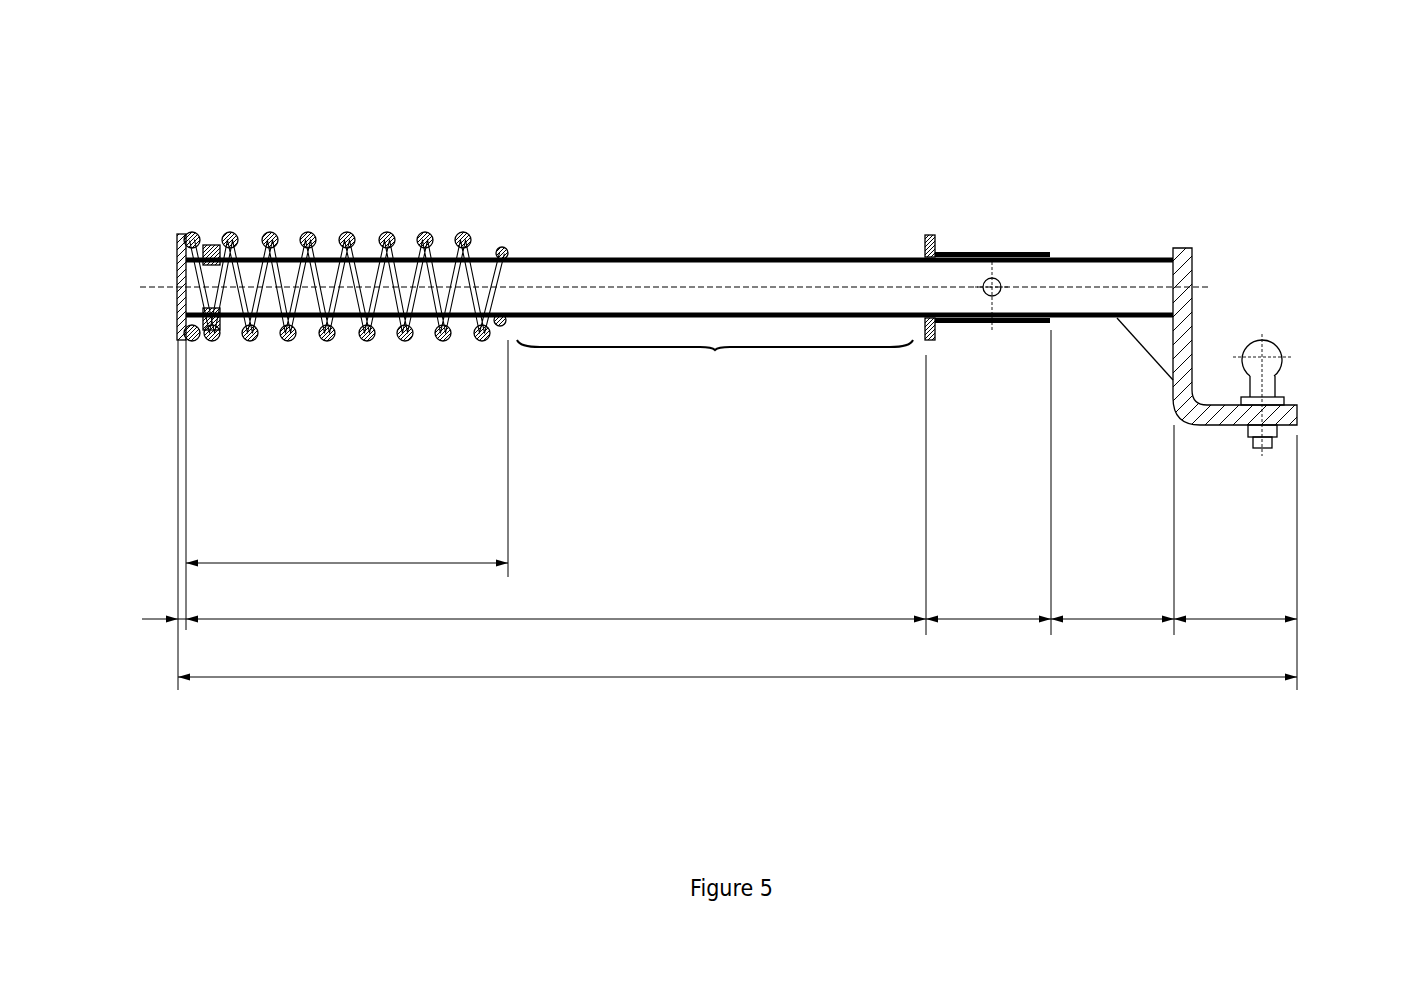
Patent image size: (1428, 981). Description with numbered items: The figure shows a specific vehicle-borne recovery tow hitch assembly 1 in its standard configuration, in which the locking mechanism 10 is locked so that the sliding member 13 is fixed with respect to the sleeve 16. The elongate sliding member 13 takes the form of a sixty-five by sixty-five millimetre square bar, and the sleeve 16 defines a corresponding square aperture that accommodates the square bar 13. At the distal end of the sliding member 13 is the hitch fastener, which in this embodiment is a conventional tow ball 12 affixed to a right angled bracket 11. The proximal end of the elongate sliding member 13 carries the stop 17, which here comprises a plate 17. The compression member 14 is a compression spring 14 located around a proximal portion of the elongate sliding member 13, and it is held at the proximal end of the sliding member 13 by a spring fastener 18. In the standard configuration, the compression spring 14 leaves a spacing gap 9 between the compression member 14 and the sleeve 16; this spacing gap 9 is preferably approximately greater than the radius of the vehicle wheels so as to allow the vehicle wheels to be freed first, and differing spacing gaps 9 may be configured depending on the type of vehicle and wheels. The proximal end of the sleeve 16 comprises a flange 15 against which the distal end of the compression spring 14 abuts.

The tow hitch assembly 1 is at (1270, 166).
The spacing gap 9 is at (715, 360).
The locking mechanism 10 is at (992, 278).
The right angled bracket 11 is at (1192, 268).
The tow ball 12 is at (1283, 372).
The elongate sliding member 13 is at (808, 258).
The compression spring 14 is at (383, 240).
The flange 15 is at (927, 250).
The sleeve 16 is at (972, 255).
The stop 17 is at (183, 235).
The spring fastener 18 is at (210, 250).